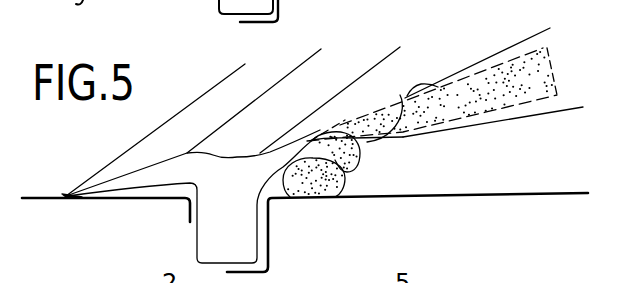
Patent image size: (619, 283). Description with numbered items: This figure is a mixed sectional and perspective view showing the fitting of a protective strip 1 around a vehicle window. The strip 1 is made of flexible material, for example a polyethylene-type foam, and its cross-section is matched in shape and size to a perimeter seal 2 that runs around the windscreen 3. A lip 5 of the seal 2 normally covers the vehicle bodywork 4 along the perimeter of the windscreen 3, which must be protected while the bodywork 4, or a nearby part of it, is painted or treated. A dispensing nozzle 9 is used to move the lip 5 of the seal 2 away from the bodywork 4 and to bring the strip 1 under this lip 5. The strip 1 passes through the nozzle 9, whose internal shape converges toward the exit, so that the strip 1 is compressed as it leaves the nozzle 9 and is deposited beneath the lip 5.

The strip 1 is at (318, 180).
The perimeter seal 2 is at (254, 134).
The windscreen 3 is at (47, 198).
The vehicle bodywork 4 is at (452, 198).
The lip 5 is at (403, 85).
The dispensing nozzle 9 is at (517, 118).